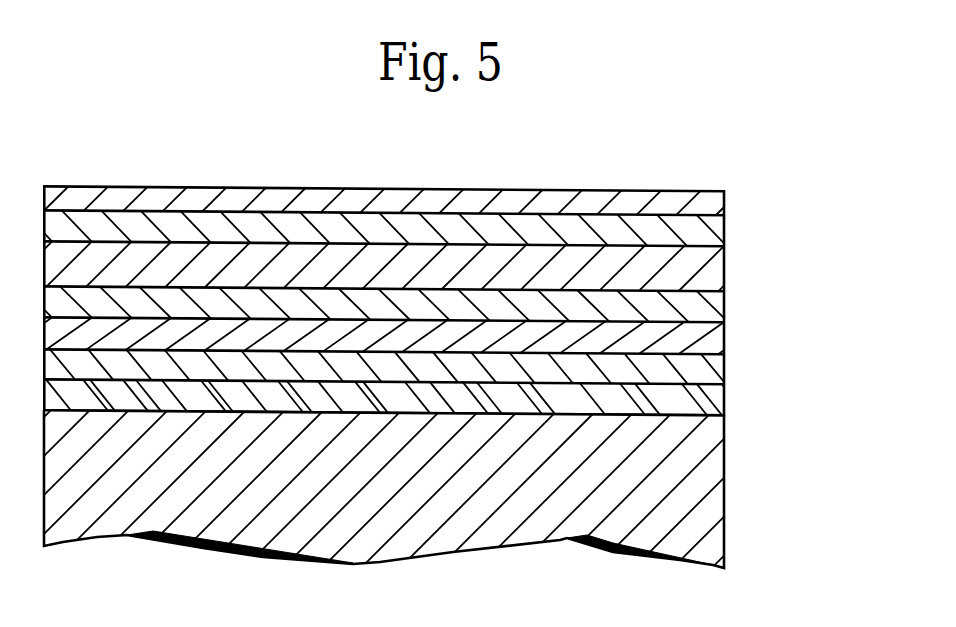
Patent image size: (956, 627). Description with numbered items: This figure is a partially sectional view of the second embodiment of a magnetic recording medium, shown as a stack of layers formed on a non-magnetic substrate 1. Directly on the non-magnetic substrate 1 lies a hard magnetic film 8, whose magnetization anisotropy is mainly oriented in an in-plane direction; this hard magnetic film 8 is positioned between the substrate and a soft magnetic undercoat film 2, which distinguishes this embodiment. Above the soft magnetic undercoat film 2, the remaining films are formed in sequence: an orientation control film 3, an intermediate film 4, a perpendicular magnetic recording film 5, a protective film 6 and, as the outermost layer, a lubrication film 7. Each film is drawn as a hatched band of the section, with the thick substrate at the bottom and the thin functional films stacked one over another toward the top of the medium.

The non-magnetic substrate 1 is at (718, 500).
The hard magnetic film 8 is at (725, 408).
The soft magnetic undercoat film 2 is at (725, 368).
The orientation control film 3 is at (726, 333).
The intermediate film 4 is at (726, 303).
The perpendicular magnetic recording film 5 is at (726, 262).
The protective film 6 is at (726, 218).
The lubrication film 7 is at (726, 191).